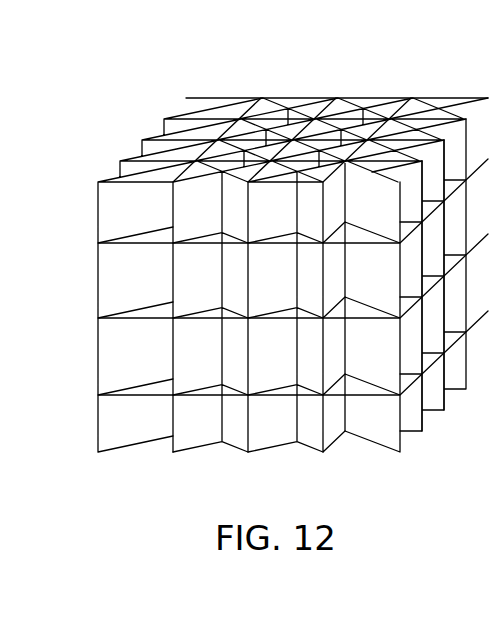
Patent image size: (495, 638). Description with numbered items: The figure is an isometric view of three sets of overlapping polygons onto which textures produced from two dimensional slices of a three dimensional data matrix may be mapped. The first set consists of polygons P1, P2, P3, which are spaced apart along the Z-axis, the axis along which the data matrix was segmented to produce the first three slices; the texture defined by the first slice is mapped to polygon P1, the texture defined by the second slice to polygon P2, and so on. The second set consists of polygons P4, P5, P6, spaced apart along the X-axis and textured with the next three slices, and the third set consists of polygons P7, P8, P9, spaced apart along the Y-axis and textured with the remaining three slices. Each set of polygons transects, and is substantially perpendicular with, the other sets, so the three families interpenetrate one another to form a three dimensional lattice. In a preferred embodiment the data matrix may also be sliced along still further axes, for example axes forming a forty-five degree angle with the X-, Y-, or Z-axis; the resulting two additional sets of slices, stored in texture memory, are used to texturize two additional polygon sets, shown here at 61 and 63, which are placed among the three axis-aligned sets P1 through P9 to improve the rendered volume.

The additional polygon set 61 is at (205, 96).
The additional polygon set 63 is at (457, 103).
The polygon P1 is at (413, 296).
The polygon P2 is at (435, 285).
The polygon P3 is at (457, 264).
The polygon P4 is at (372, 241).
The polygon P5 is at (372, 316).
The polygon P6 is at (372, 393).
The polygon P7 is at (241, 98).
The polygon P8 is at (320, 100).
The polygon P9 is at (367, 275).